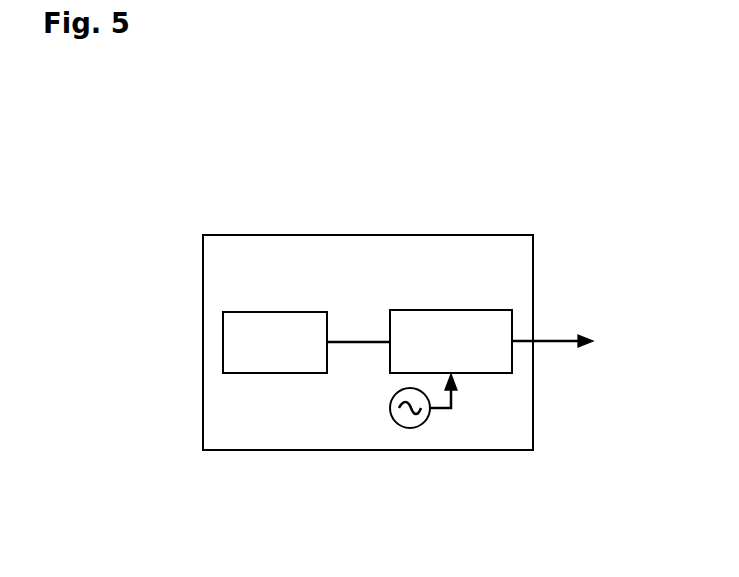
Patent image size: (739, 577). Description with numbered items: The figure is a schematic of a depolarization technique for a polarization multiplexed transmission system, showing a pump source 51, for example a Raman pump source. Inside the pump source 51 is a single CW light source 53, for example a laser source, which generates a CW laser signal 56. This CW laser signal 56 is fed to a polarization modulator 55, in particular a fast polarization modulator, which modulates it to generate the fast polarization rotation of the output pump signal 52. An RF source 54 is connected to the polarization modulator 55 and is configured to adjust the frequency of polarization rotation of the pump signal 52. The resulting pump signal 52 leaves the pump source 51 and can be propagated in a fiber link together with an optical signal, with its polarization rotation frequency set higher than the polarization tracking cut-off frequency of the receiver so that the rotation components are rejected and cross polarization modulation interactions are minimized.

The pump source 51 is at (340, 235).
The pump signal 52 is at (576, 346).
The CW light source 53 is at (243, 311).
The RF source 54 is at (424, 421).
The polarization modulator 55 is at (472, 310).
The CW laser signal 56 is at (347, 341).